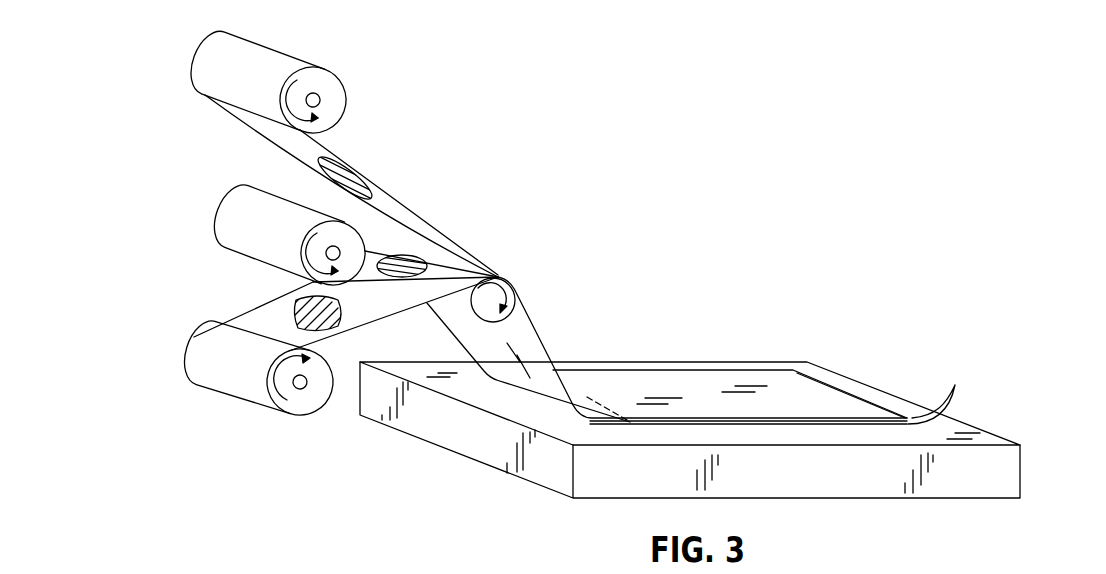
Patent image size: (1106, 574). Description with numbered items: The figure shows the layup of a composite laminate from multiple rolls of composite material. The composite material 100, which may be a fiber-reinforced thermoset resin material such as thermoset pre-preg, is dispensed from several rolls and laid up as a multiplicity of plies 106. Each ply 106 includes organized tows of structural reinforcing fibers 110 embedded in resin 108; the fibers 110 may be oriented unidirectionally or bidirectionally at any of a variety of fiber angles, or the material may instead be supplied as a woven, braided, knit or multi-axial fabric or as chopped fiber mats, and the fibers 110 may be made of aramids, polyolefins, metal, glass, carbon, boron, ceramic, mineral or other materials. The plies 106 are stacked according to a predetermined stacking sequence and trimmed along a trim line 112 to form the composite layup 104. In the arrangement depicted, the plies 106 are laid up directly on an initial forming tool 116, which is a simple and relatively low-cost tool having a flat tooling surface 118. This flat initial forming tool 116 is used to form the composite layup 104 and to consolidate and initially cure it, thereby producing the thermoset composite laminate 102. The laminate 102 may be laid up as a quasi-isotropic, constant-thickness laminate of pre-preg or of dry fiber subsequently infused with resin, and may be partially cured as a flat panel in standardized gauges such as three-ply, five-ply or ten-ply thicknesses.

The composite material 100 is at (197, 55).
The resin 108 is at (385, 207).
The structural reinforcing fibers 110 is at (343, 167).
The thermoset composite laminate 102 is at (712, 371).
The layup 104 is at (833, 383).
The plies 106 is at (944, 389).
The trim line 112 is at (587, 397).
The initial forming tool 116 is at (1022, 480).
The flat tooling surface 118 is at (968, 435).